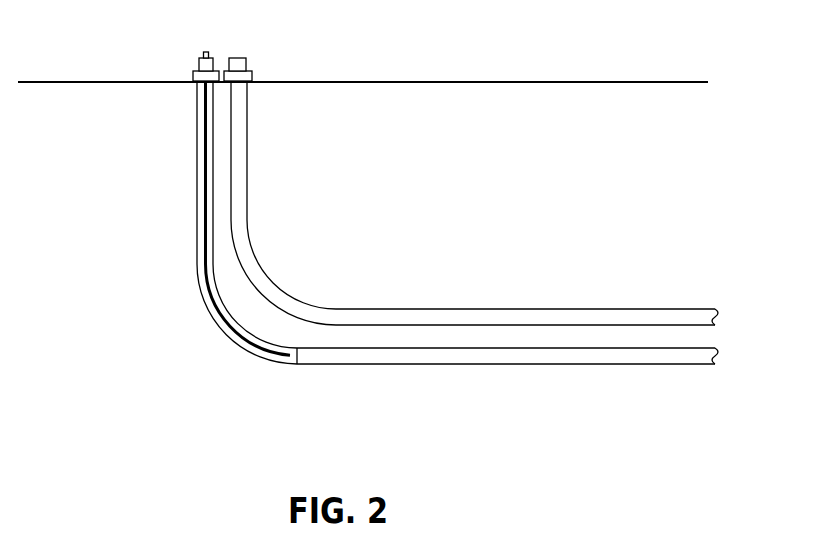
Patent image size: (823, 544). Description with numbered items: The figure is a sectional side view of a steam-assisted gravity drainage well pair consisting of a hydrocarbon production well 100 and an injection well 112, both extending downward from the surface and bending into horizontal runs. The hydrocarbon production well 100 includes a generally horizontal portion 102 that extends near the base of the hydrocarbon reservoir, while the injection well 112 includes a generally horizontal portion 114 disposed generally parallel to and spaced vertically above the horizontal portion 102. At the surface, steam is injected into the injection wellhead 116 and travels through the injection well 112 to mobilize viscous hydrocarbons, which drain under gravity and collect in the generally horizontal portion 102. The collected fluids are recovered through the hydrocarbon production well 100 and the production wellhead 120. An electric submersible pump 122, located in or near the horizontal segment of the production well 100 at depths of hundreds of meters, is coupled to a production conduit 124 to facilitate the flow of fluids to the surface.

The hydrocarbon production well 100 is at (197, 215).
The generally horizontal portion 102 is at (493, 364).
The injection well 112 is at (247, 228).
The generally horizontal portion 114 is at (530, 308).
The injection wellhead 116 is at (240, 65).
The production wellhead 120 is at (199, 66).
The electric submersible pump 122 is at (292, 360).
The production conduit 124 is at (225, 320).